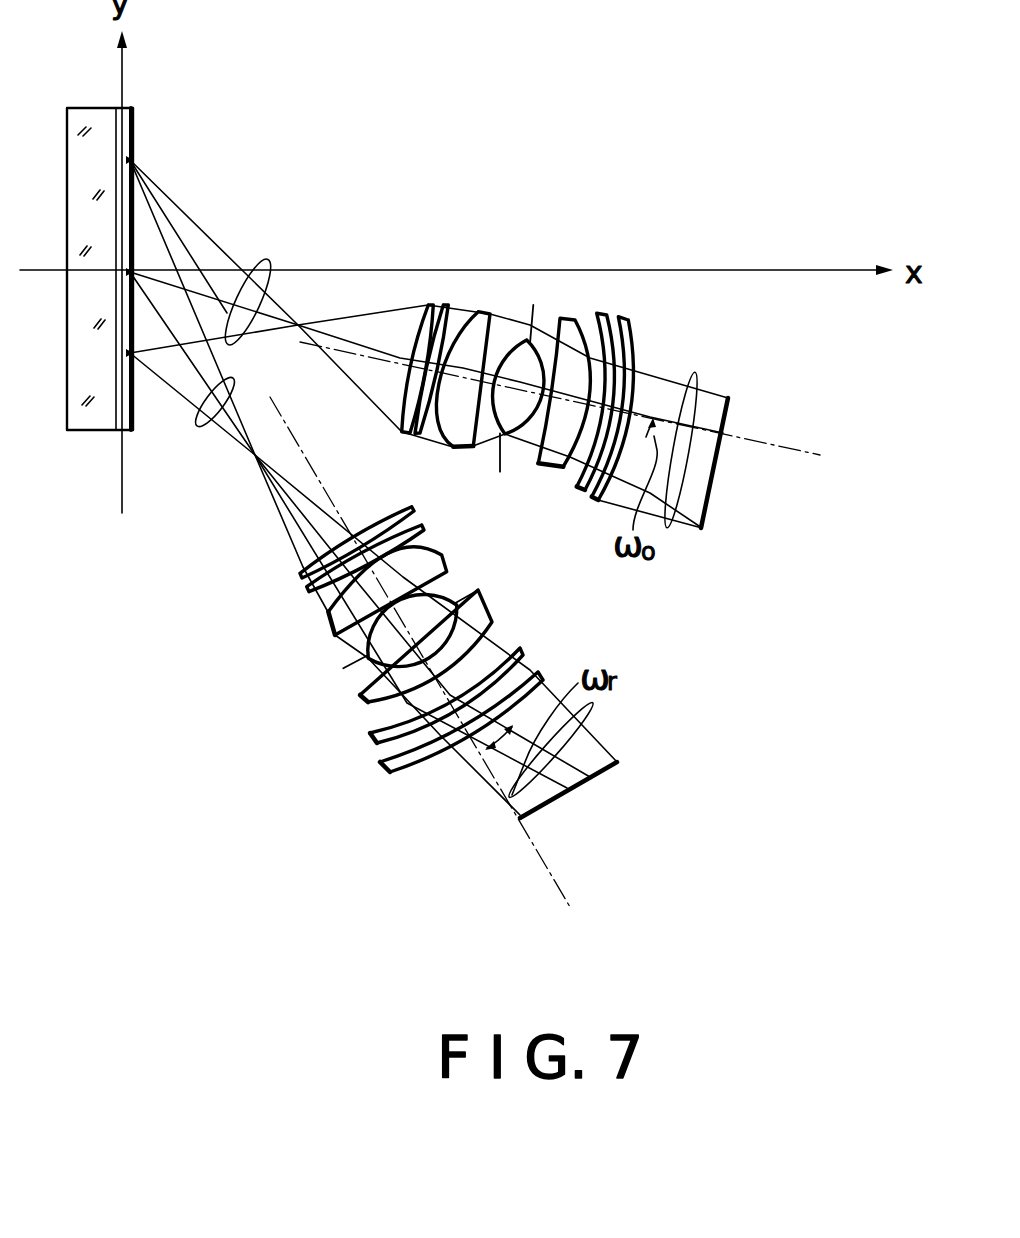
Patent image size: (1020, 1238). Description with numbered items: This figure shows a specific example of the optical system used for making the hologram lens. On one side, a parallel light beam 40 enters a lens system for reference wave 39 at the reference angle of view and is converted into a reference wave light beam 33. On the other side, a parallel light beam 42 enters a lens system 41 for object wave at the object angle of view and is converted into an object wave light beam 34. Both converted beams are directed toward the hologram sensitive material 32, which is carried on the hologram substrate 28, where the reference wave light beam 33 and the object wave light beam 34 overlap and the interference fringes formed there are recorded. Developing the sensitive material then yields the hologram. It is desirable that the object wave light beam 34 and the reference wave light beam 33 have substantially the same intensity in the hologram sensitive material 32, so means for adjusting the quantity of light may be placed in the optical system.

The hologram substrate 28 is at (92, 108).
The hologram sensitive material 32 is at (133, 107).
The reference wave light beam 33 is at (198, 426).
The object wave light beam 34 is at (268, 262).
The lens system for reference wave 39 is at (297, 578).
The parallel light beam 40 is at (520, 806).
The lens system for object wave 41 is at (650, 303).
The parallel light beam 42 is at (695, 373).